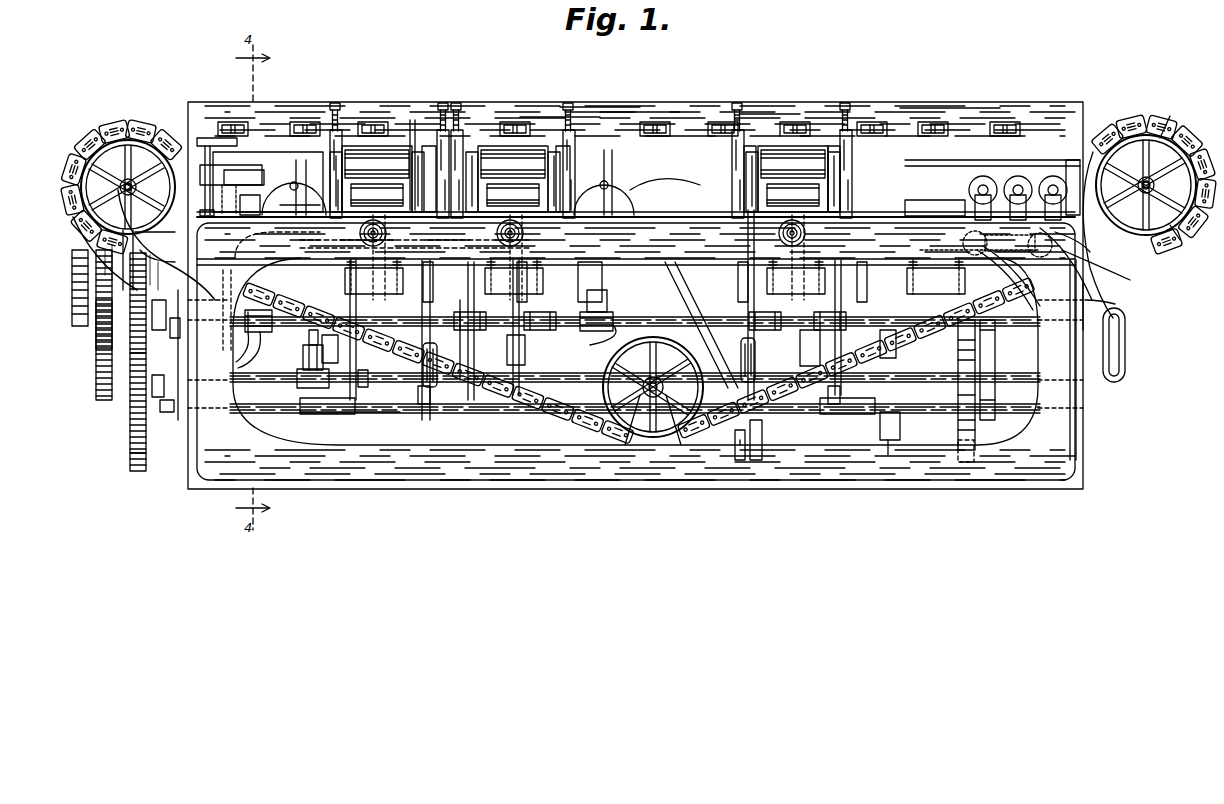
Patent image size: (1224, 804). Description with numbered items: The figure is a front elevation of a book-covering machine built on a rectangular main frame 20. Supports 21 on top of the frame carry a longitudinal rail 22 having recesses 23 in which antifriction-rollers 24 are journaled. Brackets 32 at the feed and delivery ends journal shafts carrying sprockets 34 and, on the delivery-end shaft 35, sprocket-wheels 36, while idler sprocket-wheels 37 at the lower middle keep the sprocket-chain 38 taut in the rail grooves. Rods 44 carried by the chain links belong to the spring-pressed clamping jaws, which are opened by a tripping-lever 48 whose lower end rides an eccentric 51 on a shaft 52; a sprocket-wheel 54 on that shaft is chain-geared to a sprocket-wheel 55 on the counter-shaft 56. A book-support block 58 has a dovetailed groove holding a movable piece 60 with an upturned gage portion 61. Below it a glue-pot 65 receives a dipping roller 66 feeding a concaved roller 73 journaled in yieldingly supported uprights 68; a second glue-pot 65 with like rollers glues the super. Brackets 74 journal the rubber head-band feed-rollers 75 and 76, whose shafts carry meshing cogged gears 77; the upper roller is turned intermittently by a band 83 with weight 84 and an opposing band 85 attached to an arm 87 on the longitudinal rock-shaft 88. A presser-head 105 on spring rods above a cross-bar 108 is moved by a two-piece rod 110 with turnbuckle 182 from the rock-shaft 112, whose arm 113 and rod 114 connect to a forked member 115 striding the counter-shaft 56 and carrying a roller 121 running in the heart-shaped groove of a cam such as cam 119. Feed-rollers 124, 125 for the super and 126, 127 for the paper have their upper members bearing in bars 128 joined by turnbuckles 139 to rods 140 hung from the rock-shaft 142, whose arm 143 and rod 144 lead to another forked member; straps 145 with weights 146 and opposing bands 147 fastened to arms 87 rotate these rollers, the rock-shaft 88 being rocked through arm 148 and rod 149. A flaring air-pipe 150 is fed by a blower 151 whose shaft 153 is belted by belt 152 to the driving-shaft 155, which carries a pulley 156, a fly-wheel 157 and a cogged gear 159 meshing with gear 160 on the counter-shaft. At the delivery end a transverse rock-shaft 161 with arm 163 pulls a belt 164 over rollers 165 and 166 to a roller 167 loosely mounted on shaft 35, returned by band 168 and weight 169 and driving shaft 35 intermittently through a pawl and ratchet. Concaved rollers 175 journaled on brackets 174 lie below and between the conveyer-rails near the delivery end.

The main frame 20 is at (488, 488).
The supports 21 is at (205, 170).
The rail 22 is at (684, 120).
The recesses 23 is at (235, 122).
The antifriction-roller 24 is at (292, 125).
The brackets 32 is at (1146, 186).
The sprockets 34 is at (128, 215).
The shaft 35 is at (1183, 241).
The sprocket-wheels 36 is at (1126, 128).
The sprocket-wheels or idlers 37 is at (653, 391).
The sprocket-chain 38 is at (136, 128).
The rods 44 is at (155, 239).
The tripping-lever 48 is at (250, 152).
The eccentric 51 is at (262, 344).
The shaft 52 is at (179, 355).
The sprocket-wheel 54 is at (155, 348).
The sprocket-wheel 55 is at (168, 412).
The counter-shaft 56 is at (300, 404).
The block 58 is at (250, 177).
The piece 60 is at (300, 207).
The upturned portion 61 is at (208, 165).
The glue-pot 65 is at (680, 250).
The roller 66 is at (598, 210).
The uprights 68 is at (303, 174).
The concaved roller 73 is at (300, 190).
The brackets 74 is at (460, 150).
The head-band feed-roller 75 is at (377, 179).
The head-band feed-roller 76 is at (377, 179).
The cogged gear 77 is at (408, 244).
The band or belt 83 is at (432, 276).
The weight 84 is at (450, 340).
The band or belt 85 is at (373, 330).
The arm 87 is at (418, 394).
The rock-shaft 88 is at (460, 414).
The presser-head 105 is at (924, 200).
The cross-bar 108 is at (655, 277).
The rod 110 is at (635, 331).
The rock-shaft 112 is at (345, 412).
The arm 113 is at (303, 358).
The rod 114 is at (312, 331).
The forked member 115 is at (990, 356).
The cam 119 is at (966, 450).
The roller 121 is at (1000, 338).
The roller 124 is at (513, 179).
The roller 125 is at (513, 179).
The roller 126 is at (793, 179).
The roller 127 is at (793, 179).
The bars 128 is at (430, 160).
The turnbuckles 139 is at (742, 285).
The screw-threaded rods 140 is at (665, 314).
The rock-shaft 142 is at (656, 325).
The arm 143 is at (613, 310).
The rod 144 is at (587, 280).
The belt or strap 145 is at (748, 225).
The weight 146 is at (748, 360).
The band or strap 147 is at (693, 327).
The arm 148 is at (906, 426).
The rod 149 is at (898, 455).
The flaring air-pipe 150 is at (666, 200).
The blower or fan 151 is at (731, 442).
The belt 152 is at (768, 426).
The shaft 153 is at (830, 462).
The main or driving shaft 155 is at (157, 263).
The pulley 156 is at (80, 326).
The fly-wheel 157 is at (105, 325).
The cogged gear 159 is at (128, 245).
The gear 160 is at (148, 456).
The rock-shaft 161 is at (1099, 264).
The arm 163 is at (1000, 270).
The belt or band 164 is at (950, 252).
The roller 165 is at (972, 235).
The roller 166 is at (1086, 243).
The roller 167 is at (1173, 116).
The band or belt 168 is at (1121, 305).
The weight 169 is at (1124, 340).
The brackets 174 is at (1028, 180).
The rollers 175 is at (982, 182).
The turnbuckles 182 is at (622, 347).